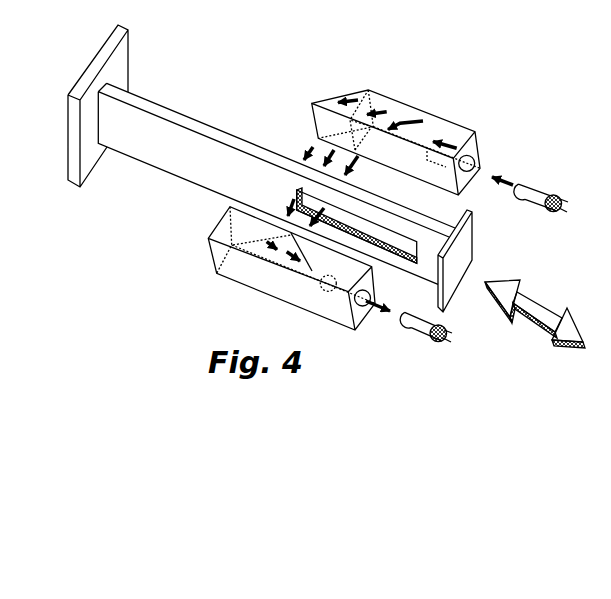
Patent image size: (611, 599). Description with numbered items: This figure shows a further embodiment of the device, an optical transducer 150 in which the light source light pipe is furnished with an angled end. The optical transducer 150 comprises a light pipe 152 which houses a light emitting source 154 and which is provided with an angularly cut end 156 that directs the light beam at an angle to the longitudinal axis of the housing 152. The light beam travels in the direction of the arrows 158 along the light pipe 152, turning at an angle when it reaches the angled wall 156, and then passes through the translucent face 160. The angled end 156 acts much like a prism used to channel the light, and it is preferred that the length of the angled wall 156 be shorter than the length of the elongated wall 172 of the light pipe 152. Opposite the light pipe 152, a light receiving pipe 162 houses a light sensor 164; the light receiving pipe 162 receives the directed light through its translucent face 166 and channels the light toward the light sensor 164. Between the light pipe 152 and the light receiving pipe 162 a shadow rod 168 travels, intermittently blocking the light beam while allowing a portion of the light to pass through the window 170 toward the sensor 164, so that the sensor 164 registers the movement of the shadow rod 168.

The optical transducer 150 is at (237, 81).
The light pipe 152 is at (458, 116).
The light emitting source 154 is at (538, 183).
The angularly cut end 156 is at (318, 102).
The arrows 158 is at (377, 108).
The translucent face 160 is at (325, 123).
The light receiving pipe 162 is at (268, 293).
The light sensor 164 is at (413, 338).
The translucent face 166 is at (240, 213).
The shadow rod 168 is at (155, 103).
The window 170 is at (395, 237).
The elongated wall 172 is at (420, 108).